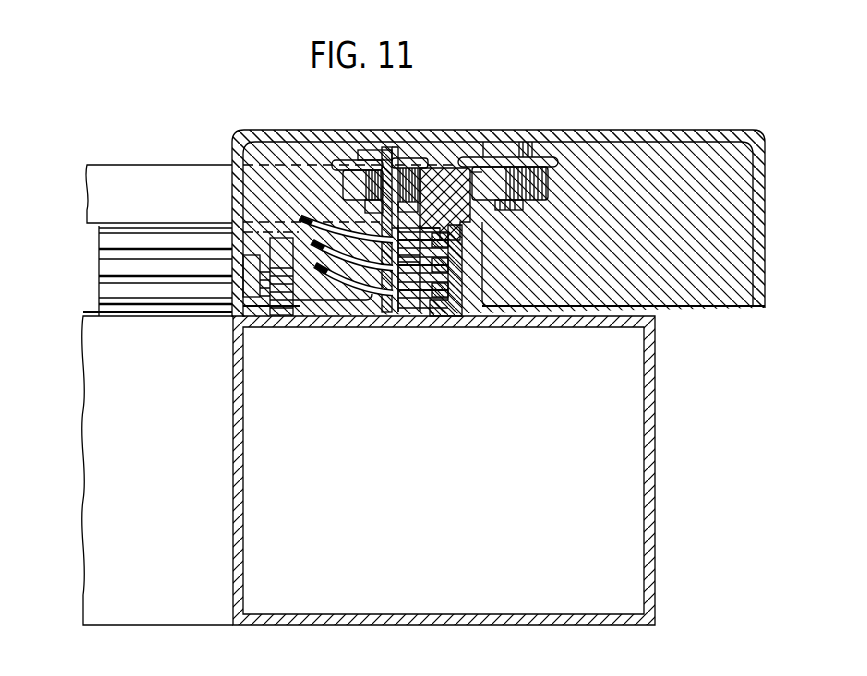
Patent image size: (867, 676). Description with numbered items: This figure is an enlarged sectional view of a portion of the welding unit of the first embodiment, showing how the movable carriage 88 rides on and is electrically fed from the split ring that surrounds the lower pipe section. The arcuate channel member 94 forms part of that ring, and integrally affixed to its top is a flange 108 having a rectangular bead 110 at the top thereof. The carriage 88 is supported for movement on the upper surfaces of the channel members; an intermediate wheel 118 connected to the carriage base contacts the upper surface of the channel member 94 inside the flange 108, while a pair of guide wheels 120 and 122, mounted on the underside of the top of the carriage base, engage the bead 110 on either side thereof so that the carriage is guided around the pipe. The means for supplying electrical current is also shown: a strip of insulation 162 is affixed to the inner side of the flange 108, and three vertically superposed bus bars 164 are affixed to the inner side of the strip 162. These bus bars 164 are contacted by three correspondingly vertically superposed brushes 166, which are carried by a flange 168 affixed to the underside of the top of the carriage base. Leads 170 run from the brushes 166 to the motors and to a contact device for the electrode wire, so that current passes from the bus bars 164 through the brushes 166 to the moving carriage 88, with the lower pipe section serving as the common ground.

The carriage 88 is at (698, 126).
The arcuate channel member 94 is at (656, 474).
The flange 108 is at (478, 230).
The rectangular bead 110 is at (125, 185).
The intermediate wheel 118 is at (282, 248).
The guide wheel 120 is at (340, 182).
The guide wheel 122 is at (549, 188).
The strip of insulation 162 is at (463, 288).
The bus bars 164 is at (106, 293).
The brushes 166 is at (407, 256).
The flange 168 is at (393, 147).
The leads 170 is at (352, 236).